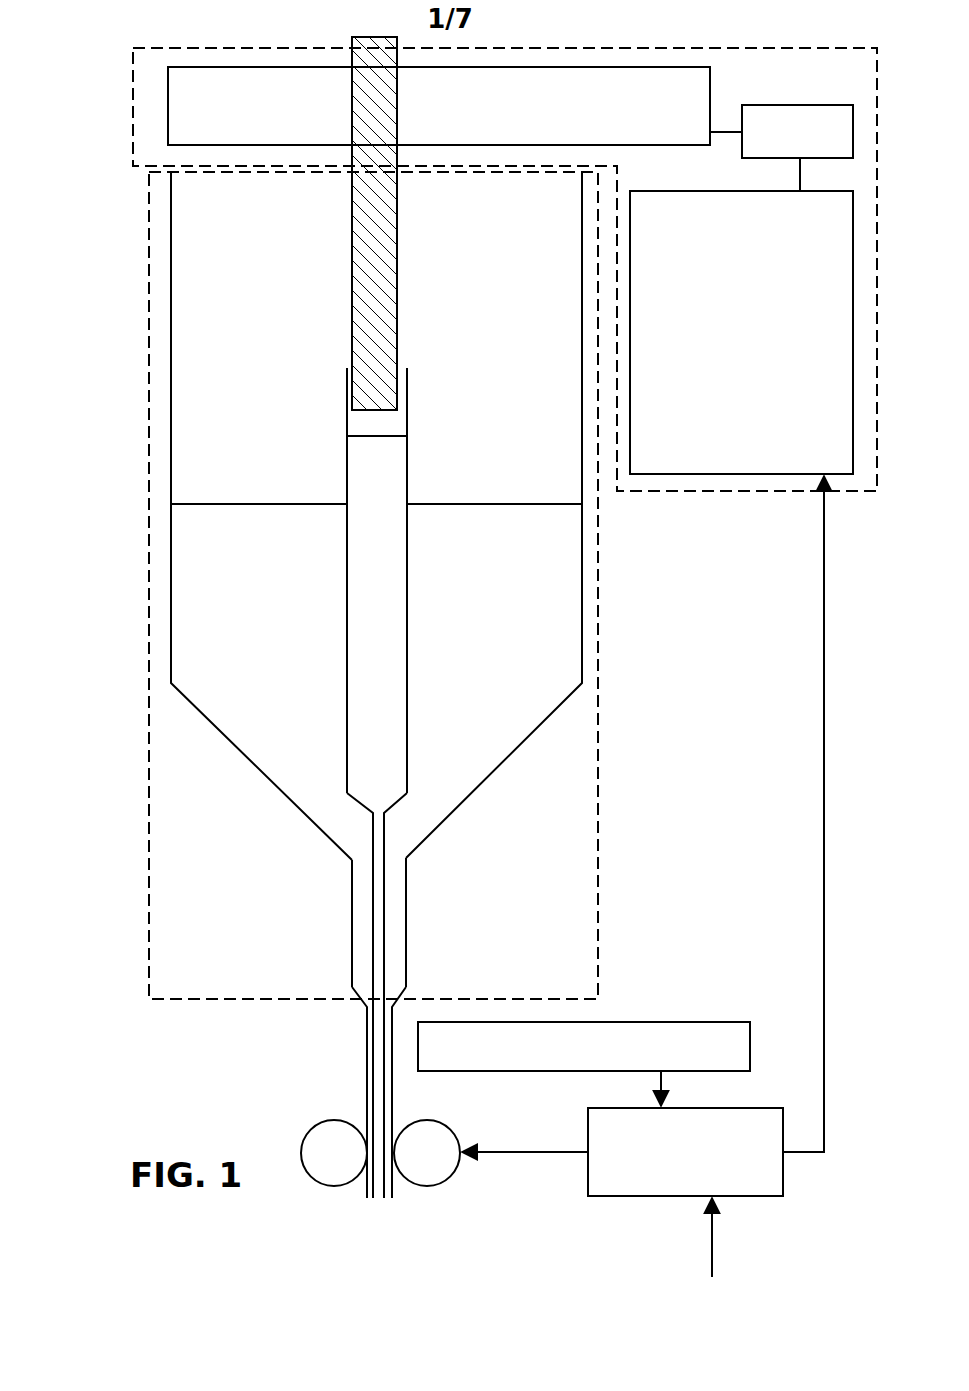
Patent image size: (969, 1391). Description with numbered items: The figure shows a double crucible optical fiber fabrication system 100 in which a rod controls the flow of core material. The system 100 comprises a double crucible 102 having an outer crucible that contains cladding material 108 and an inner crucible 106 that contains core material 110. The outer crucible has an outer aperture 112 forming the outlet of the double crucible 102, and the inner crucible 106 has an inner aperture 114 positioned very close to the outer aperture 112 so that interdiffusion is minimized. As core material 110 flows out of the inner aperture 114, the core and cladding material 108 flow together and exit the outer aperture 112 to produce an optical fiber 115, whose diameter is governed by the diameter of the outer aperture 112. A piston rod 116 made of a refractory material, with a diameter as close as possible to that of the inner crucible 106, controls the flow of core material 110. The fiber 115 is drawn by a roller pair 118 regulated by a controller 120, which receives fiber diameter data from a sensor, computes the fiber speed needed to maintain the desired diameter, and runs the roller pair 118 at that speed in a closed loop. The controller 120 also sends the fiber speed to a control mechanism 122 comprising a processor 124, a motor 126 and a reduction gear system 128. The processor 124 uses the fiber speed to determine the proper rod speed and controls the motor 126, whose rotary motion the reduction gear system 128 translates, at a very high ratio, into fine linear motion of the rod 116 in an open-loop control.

The double crucible optical fiber fabrication system 100 is at (97, 57).
The double crucible 102 is at (149, 432).
The inner crucible 106 is at (352, 405).
The cladding material 108 is at (521, 502).
The core material 110 is at (382, 437).
The outer aperture 112 is at (406, 946).
The inner aperture 114 is at (379, 812).
The optical fiber 115 is at (367, 1034).
The piston rod 116 is at (352, 40).
The roller pair 118 is at (425, 1186).
The controller 120 is at (780, 1108).
The control mechanism 122 is at (821, 47).
The processor 124 is at (713, 190).
The motor 126 is at (835, 105).
The reduction gear system 128 is at (712, 88).